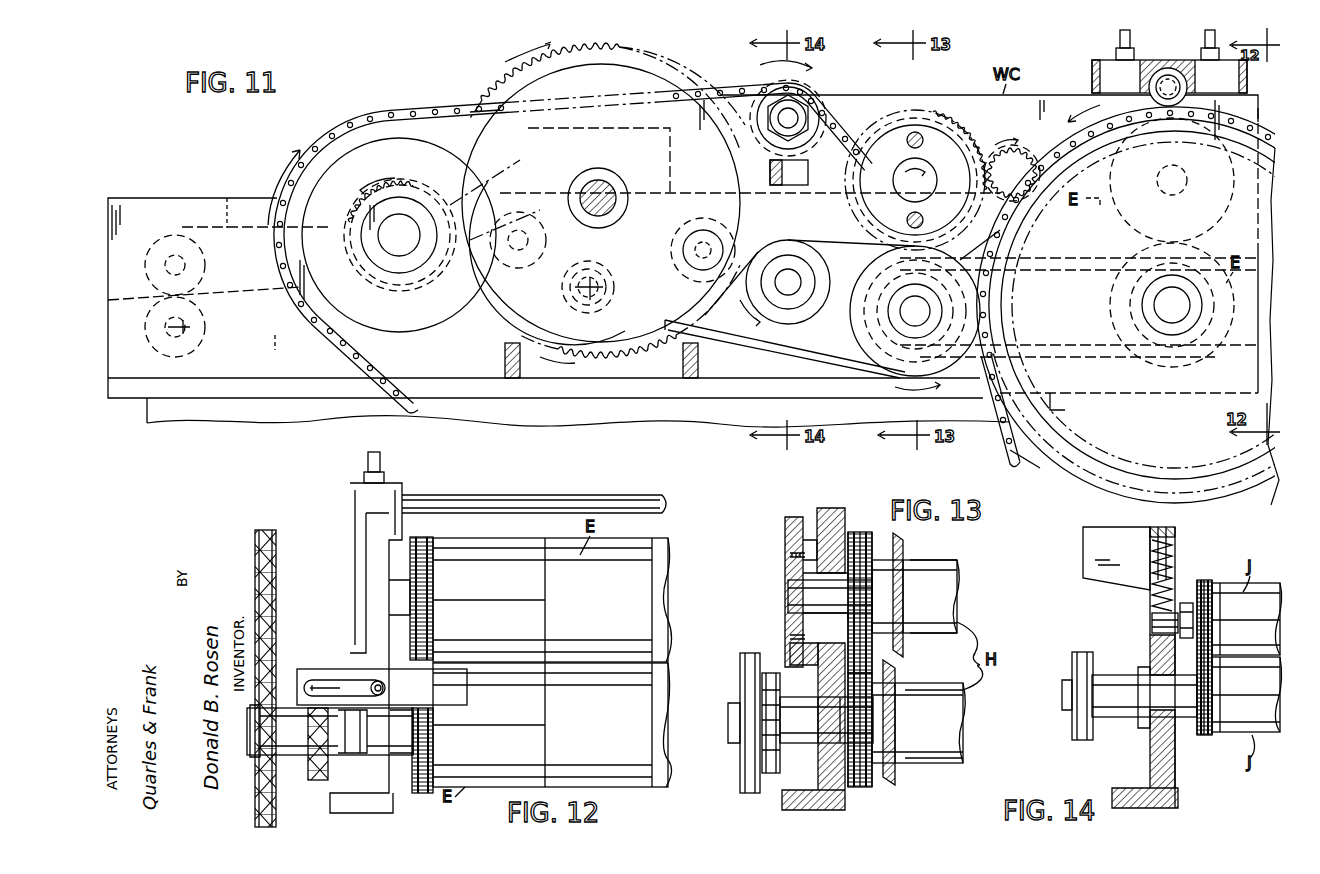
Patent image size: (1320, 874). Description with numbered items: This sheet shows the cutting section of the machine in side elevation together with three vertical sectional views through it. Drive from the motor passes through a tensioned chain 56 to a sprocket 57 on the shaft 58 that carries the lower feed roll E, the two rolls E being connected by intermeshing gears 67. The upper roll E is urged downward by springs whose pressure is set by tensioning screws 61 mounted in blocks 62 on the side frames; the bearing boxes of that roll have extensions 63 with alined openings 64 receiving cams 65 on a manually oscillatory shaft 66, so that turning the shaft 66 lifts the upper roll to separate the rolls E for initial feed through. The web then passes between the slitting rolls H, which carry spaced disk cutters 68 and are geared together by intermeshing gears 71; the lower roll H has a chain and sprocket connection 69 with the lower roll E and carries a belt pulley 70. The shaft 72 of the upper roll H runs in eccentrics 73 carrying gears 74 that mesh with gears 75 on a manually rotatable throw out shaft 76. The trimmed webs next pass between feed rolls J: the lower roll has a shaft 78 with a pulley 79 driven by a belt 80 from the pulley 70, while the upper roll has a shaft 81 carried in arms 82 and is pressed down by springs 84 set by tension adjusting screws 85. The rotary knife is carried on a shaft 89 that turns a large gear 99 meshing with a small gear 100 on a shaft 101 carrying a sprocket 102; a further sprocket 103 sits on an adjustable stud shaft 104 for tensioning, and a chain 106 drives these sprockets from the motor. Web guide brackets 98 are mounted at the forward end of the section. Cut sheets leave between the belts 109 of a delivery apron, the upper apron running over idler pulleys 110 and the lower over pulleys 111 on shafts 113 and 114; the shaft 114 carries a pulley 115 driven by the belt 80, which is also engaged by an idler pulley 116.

In FIG. 11, the chain 56 is at (1000, 440).
In FIG. 12, the chain 56 is at (278, 600).
In FIG. 11, the sprocket 57 is at (1052, 455).
In FIG. 12, the sprocket 57 is at (278, 632).
In FIG. 11, the shaft 58 is at (1160, 305).
In FIG. 12, the shaft 58 is at (395, 755).
In FIG. 11, the tensioning screws 61 is at (1118, 40).
In FIG. 12, the tensioning screws 61 is at (366, 456).
In FIG. 11, the blocks 62 is at (1100, 73).
In FIG. 12, the blocks 62 is at (400, 486).
In FIG. 11, the extensions 63 is at (1175, 70).
In FIG. 11, the openings 64 is at (1166, 95).
In FIG. 11, the cams 65 is at (1160, 75).
In FIG. 12, the oscillatory shaft 66 is at (540, 497).
In FIG. 12, the intermeshing gears 67 is at (428, 540).
In FIG. 13, the disk cutters 68 is at (895, 660).
In FIG. 11, the chain and sprocket connection 69 is at (990, 245).
In FIG. 12, the chain and sprocket connection 69 is at (328, 765).
In FIG. 13, the chain and sprocket connection 69 is at (780, 768).
In FIG. 11, the belt pulley 70 is at (862, 290).
In FIG. 13, the belt pulley 70 is at (738, 680).
In FIG. 13, the intermeshing gears 71 is at (860, 535).
In FIG. 14, the intermeshing gears 71 is at (1198, 652).
In FIG. 11, the shaft 72 is at (905, 175).
In FIG. 13, the shaft 72 is at (800, 600).
In FIG. 13, the eccentrics 73 is at (810, 540).
In FIG. 11, the gears 74 is at (940, 110).
In FIG. 13, the gears 74 is at (793, 518).
In FIG. 11, the gears 75 is at (970, 168).
In FIG. 11, the throw out shaft 76 is at (1025, 155).
In FIG. 11, the shaft 78 is at (788, 275).
In FIG. 14, the shaft 78 is at (1135, 715).
In FIG. 11, the pulley 79 is at (812, 300).
In FIG. 14, the pulley 79 is at (1072, 728).
In FIG. 11, the belt 80 is at (820, 243).
In FIG. 14, the belt 80 is at (1082, 655).
In FIG. 14, the shaft 81 is at (1150, 628).
In FIG. 14, the arms 82 is at (1186, 603).
In FIG. 14, the springs 84 is at (1150, 592).
In FIG. 14, the tension adjusting screws 85 is at (1160, 528).
In FIG. 11, the rotary shaft 89 is at (592, 192).
In FIG. 12, the web guide brackets 98 is at (470, 695).
In FIG. 11, the large gear 99 is at (630, 347).
In FIG. 11, the small gear 100 is at (415, 190).
In FIG. 11, the shaft 101 is at (388, 240).
In FIG. 11, the sprocket 102 is at (355, 140).
In FIG. 11, the sprocket 103 is at (786, 186).
In FIG. 11, the stud shaft 104 is at (810, 100).
In FIG. 11, the chain 106 is at (455, 105).
In FIG. 11, the belts 109 is at (251, 261).
In FIG. 11, the idler pulleys 110 is at (150, 270).
In FIG. 11, the pulleys 111 is at (150, 340).
In FIG. 11, the shaft 113 is at (200, 325).
In FIG. 11, the shaft 114 is at (606, 292).
In FIG. 11, the pulley 115 is at (596, 268).
In FIG. 11, the idler pulley 116 is at (703, 225).